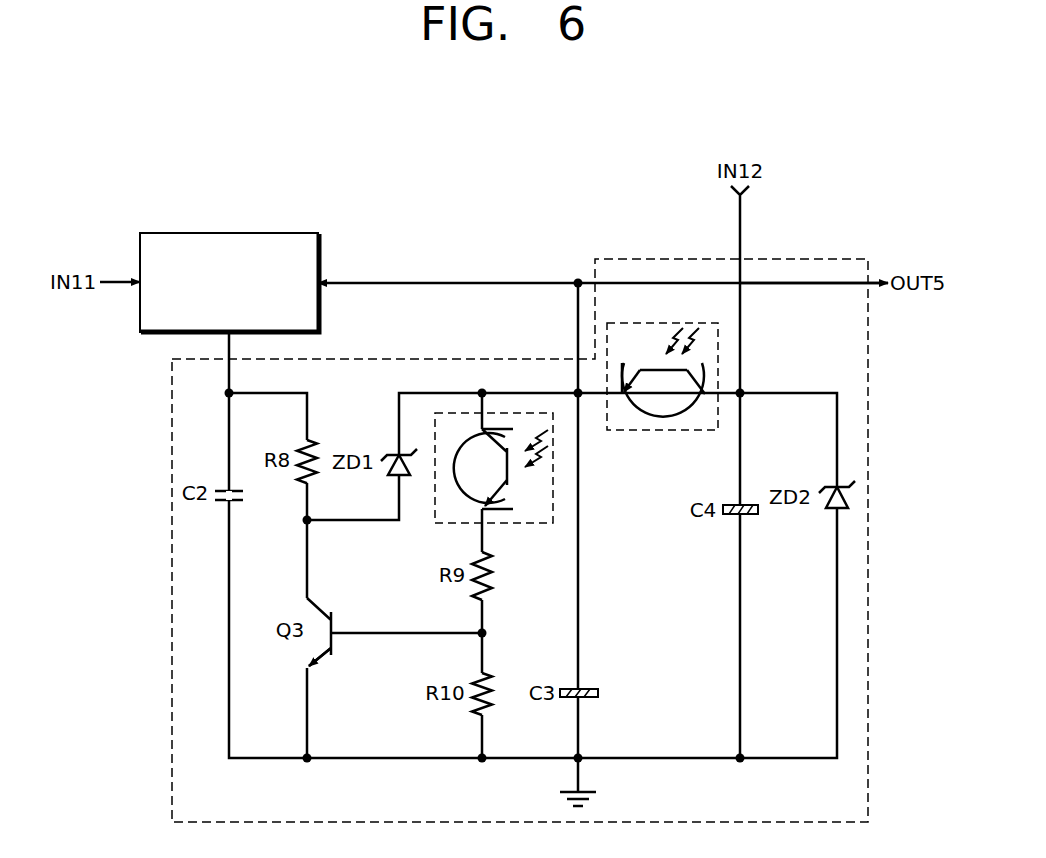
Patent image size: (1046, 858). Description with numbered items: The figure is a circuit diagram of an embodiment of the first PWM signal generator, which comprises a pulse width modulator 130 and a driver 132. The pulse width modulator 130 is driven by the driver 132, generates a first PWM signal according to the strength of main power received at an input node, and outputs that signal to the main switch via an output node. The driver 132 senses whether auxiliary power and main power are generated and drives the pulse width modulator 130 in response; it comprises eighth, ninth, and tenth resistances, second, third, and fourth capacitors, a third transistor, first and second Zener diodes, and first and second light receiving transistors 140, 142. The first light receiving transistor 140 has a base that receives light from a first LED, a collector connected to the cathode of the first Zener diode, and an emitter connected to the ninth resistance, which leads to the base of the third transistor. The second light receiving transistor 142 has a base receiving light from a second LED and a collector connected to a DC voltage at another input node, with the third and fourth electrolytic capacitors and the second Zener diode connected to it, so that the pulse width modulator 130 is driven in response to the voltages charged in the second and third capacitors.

The pulse width modulator 130 is at (272, 233).
The driver 132 is at (408, 359).
The first light receiving transistor 140 is at (527, 523).
The second light receiving transistor 142 is at (645, 430).